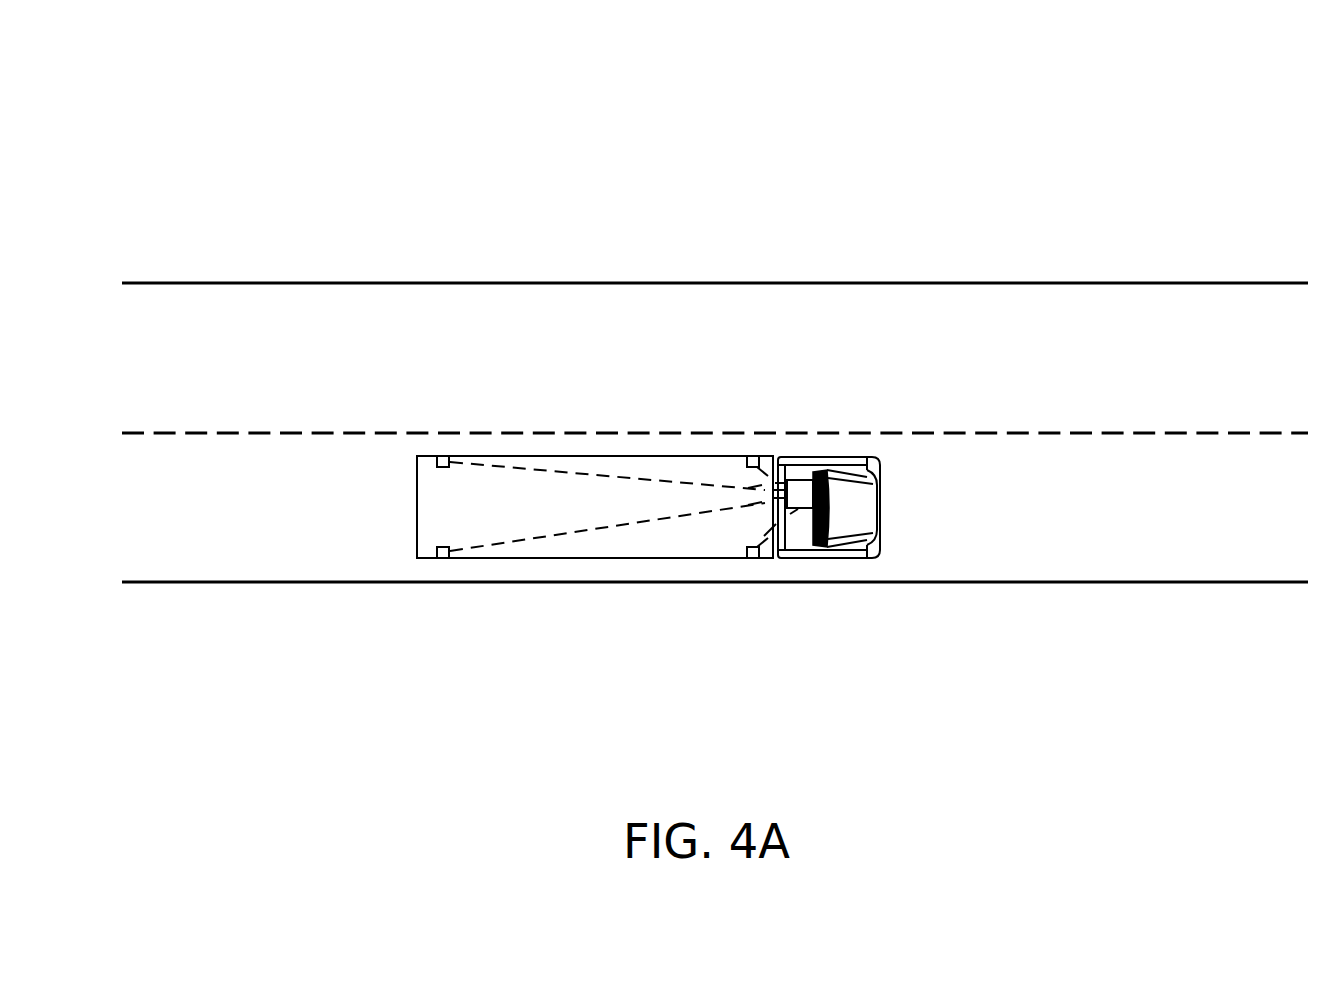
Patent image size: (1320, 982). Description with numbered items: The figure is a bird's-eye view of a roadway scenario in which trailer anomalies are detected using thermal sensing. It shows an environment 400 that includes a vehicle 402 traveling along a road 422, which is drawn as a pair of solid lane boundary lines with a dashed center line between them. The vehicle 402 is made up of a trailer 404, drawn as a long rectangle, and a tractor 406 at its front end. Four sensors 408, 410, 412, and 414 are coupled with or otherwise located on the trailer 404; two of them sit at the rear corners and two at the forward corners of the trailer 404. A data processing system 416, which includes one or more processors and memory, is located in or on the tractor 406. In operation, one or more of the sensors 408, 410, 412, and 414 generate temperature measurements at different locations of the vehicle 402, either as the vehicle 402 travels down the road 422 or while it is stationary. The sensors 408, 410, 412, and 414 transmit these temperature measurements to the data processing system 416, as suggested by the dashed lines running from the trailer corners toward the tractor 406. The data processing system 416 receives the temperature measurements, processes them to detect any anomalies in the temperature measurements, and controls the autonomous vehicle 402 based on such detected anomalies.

The environment 400 is at (266, 102).
The vehicle 402 is at (447, 367).
The trailer 404 is at (561, 558).
The tractor 406 is at (862, 457).
The sensor 408 is at (441, 456).
The sensor 410 is at (443, 558).
The sensor 412 is at (752, 456).
The sensor 414 is at (752, 558).
The data processing system 416 is at (807, 470).
The road 422 is at (168, 282).